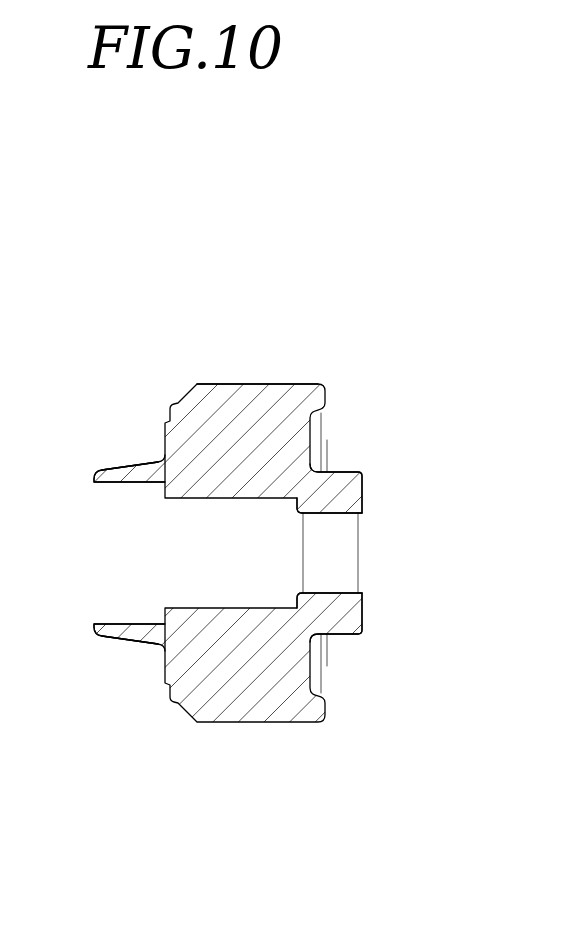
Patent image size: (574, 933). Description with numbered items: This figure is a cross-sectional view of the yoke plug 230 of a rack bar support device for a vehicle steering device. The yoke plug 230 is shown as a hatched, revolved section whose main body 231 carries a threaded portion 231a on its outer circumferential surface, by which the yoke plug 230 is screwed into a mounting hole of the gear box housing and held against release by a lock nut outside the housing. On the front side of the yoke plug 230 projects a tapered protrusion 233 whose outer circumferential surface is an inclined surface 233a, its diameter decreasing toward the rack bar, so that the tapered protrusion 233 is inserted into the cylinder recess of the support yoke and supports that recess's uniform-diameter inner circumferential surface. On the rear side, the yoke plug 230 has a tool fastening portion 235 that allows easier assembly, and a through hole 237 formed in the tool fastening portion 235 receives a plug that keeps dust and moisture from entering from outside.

The yoke plug 230 is at (66, 309).
The body 231 is at (245, 698).
The threaded portion 231a is at (258, 384).
The tapered protrusion 233 is at (110, 633).
The inclined surface 233a is at (133, 645).
The tool fastening portion 235 is at (353, 616).
The through hole 237 is at (330, 514).